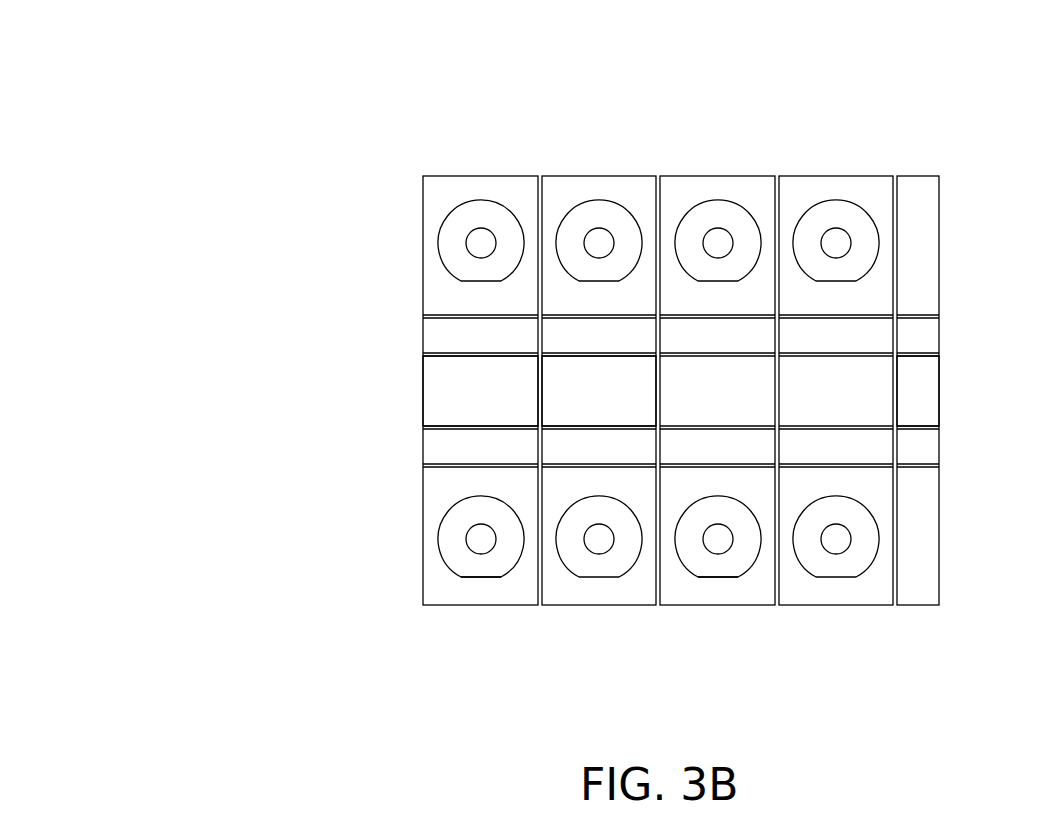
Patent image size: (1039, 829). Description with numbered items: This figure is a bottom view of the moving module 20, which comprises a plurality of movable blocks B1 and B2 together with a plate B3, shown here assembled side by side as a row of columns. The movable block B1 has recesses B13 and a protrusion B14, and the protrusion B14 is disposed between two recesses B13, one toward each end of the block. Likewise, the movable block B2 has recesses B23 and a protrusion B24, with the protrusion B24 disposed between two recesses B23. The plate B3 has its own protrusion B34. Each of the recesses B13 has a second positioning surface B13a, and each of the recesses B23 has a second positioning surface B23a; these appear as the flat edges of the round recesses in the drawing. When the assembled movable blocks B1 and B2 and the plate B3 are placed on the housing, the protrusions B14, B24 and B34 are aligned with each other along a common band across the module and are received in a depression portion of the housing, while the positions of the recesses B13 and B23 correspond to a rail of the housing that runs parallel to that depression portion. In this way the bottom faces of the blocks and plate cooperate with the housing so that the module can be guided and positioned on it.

The moving module 20 is at (240, 84).
The movable block B1 is at (481, 176).
The movable block B2 is at (598, 176).
The plate B3 is at (920, 176).
The recess B13 is at (450, 252).
The second positioning surface B13a is at (482, 577).
The protrusion B14 is at (452, 343).
The recess B23 is at (615, 220).
The second positioning surface B23a is at (718, 577).
The protrusion B24 is at (637, 345).
The protrusion B34 is at (912, 345).